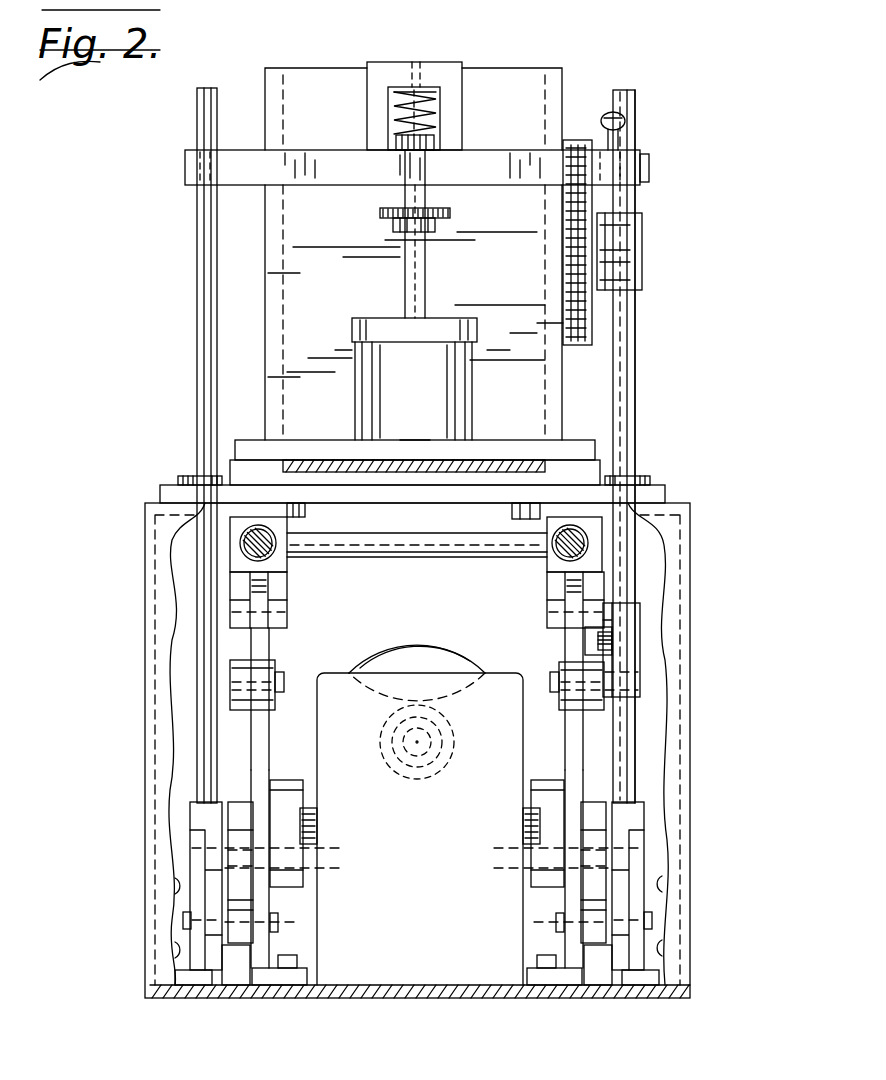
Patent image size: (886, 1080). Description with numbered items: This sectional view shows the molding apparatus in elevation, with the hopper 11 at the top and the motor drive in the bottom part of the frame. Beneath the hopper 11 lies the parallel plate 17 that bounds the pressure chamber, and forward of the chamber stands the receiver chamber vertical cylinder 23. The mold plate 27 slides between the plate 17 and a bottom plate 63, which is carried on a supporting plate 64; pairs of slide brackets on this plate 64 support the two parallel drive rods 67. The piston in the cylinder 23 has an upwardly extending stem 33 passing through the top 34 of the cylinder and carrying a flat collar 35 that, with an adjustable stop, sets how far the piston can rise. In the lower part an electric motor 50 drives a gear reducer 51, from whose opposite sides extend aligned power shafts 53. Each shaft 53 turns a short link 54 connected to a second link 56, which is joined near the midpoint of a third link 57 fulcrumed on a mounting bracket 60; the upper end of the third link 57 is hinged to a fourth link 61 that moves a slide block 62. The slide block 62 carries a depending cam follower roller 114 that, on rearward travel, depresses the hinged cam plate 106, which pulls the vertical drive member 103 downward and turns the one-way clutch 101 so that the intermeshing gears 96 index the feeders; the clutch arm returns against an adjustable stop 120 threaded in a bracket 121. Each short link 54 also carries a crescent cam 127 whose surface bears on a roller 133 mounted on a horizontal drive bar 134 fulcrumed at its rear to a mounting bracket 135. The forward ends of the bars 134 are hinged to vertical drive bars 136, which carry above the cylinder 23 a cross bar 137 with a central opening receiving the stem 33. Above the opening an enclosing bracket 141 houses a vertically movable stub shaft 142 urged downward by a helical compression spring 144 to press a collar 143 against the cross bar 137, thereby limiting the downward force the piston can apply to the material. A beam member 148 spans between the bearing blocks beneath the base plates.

The hopper 11 is at (498, 78).
The parallel plate 17 is at (478, 452).
The receiver chamber vertical cylinder 23 is at (395, 408).
The mold plate 27 is at (502, 465).
The stem 33 is at (426, 262).
The top of the cylinder 34 is at (390, 324).
The flat collar 35 is at (382, 212).
The electric motor 50 is at (426, 652).
The gear reducer 51 is at (420, 829).
The power shaft 53 is at (308, 829).
The short link 54 is at (291, 793).
The second link 56 is at (269, 778).
The third link 57 is at (250, 722).
The mounting bracket 60 is at (279, 922).
The fourth link 61 is at (269, 640).
The slide block 62 is at (278, 597).
The bottom plate 63 is at (320, 478).
The supporting plate 64 is at (410, 497).
The drive rod 67 is at (262, 550).
The intermeshing circular gears 96 is at (566, 218).
The one-way clutch 101 is at (636, 256).
The depending vertical drive member 103 is at (638, 443).
The cam plate 106 is at (612, 663).
The cam follower roller 114 is at (598, 641).
The adjustable stop 120 is at (605, 114).
The bracket 121 is at (650, 158).
The crescent cam 127 is at (240, 922).
The roller 133 is at (252, 889).
The horizontal drive bar 134 is at (215, 900).
The mounting bracket 135 is at (176, 906).
The vertical drive bar 136 is at (197, 346).
The cross bar 137 is at (186, 168).
The enclosing bracket 141 is at (384, 70).
The stub shaft 142 is at (398, 108).
The collar 143 is at (437, 148).
The helical compression spring 144 is at (432, 92).
The beam 148 is at (388, 554).